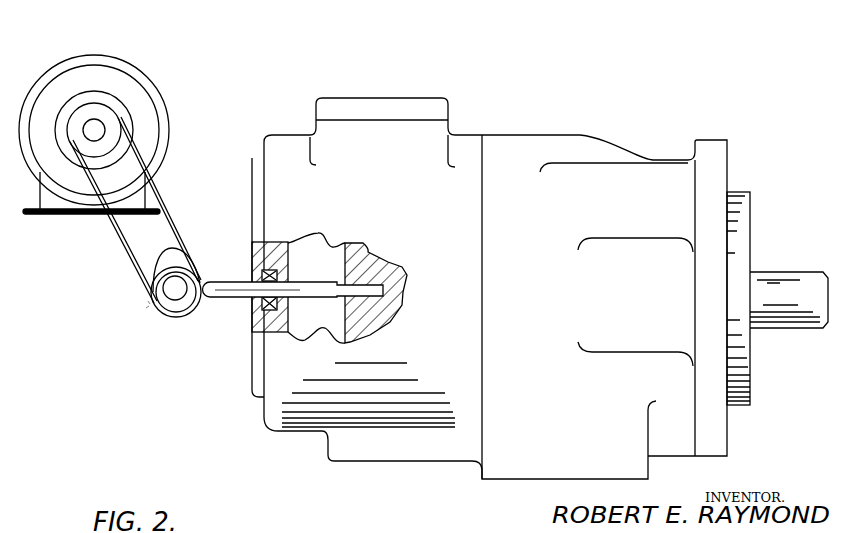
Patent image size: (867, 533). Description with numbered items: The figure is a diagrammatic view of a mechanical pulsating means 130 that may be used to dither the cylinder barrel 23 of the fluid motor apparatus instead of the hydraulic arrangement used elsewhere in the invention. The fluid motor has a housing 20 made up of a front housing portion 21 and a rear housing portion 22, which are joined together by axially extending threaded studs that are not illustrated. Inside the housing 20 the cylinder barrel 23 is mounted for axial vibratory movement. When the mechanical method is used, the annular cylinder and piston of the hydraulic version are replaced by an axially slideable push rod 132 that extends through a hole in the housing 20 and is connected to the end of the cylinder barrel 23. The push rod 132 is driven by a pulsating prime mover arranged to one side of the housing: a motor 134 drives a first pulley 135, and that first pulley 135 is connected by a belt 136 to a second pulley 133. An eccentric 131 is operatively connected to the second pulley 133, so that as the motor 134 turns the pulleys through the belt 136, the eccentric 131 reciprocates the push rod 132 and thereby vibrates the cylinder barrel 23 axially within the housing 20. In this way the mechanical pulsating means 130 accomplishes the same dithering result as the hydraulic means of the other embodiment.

The housing 20 is at (588, 138).
The front housing portion 21 is at (723, 153).
The rear housing portion 22 is at (272, 139).
The cylinder barrel 23 is at (330, 249).
The mechanical pulsating means 130 is at (153, 301).
The eccentric 131 is at (172, 260).
The push rod 132 is at (217, 297).
The second pulley 133 is at (180, 322).
The motor 134 is at (148, 77).
The first pulley 135 is at (85, 125).
The belt 136 is at (178, 218).